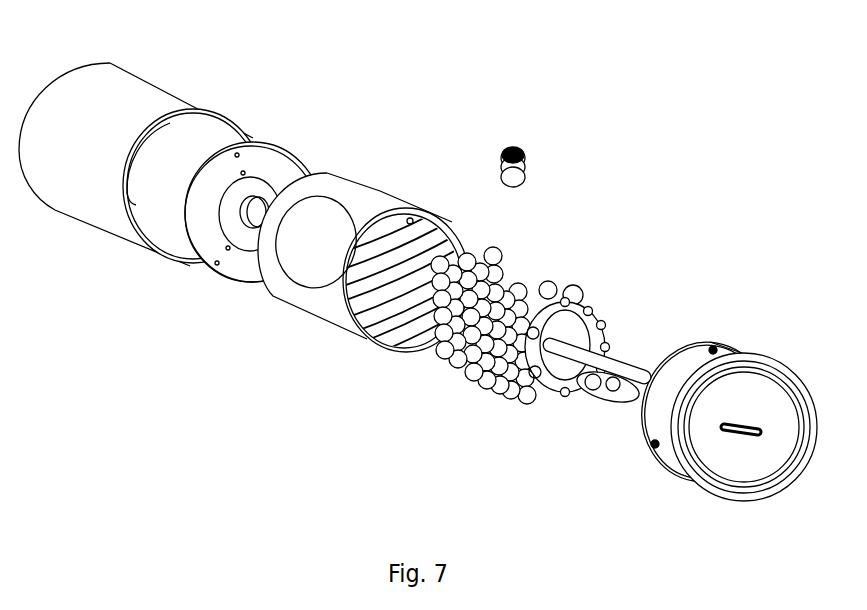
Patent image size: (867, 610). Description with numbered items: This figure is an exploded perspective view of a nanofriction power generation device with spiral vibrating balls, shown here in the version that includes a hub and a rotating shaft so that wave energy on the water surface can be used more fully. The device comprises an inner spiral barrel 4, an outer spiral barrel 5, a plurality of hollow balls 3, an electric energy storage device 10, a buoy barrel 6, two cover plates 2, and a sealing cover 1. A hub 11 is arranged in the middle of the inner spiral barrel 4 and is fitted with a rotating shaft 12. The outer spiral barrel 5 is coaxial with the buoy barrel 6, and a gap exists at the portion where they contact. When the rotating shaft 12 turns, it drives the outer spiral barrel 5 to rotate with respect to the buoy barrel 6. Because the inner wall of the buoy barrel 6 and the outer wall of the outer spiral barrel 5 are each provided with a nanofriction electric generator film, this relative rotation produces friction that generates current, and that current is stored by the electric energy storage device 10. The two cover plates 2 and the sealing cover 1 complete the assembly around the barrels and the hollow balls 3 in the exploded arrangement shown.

The sealing cover 1 is at (767, 397).
The cover plates 2 is at (278, 163).
The hollow balls 3 is at (527, 163).
The inner spiral barrel 4 is at (523, 293).
The outer spiral barrel 5 is at (357, 187).
The buoy barrel 6 is at (140, 103).
The electric energy storage device 10 is at (605, 410).
The hub 11 is at (542, 398).
The rotating shaft 12 is at (612, 370).